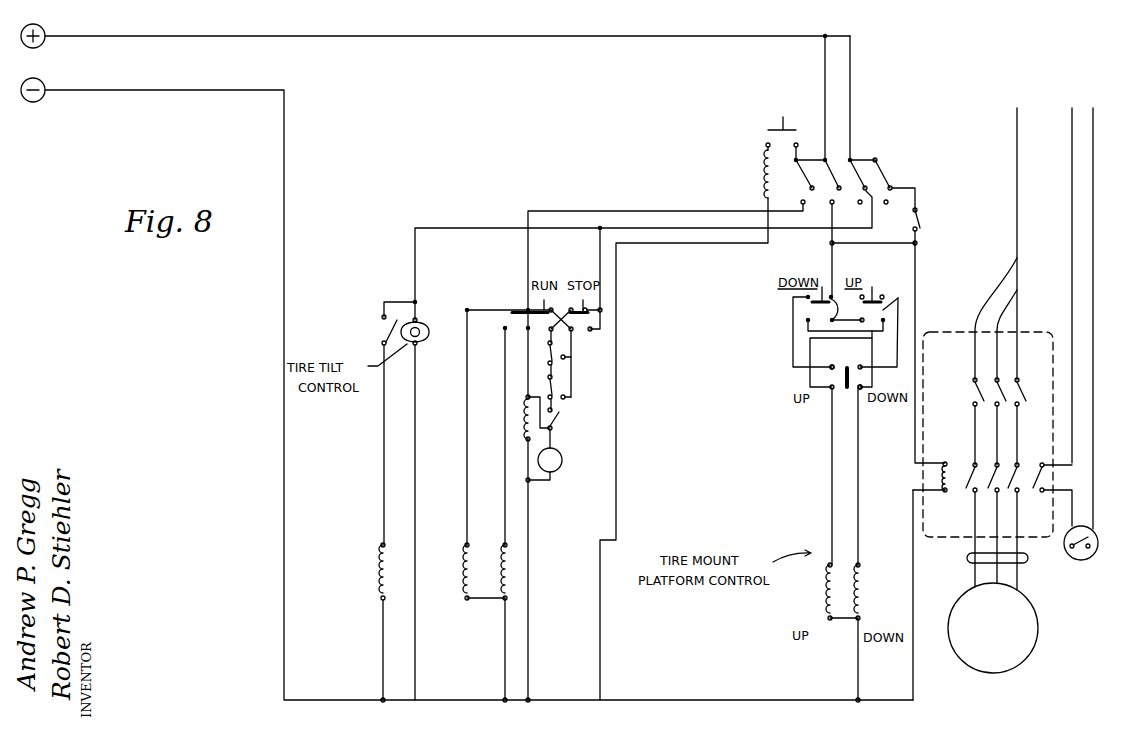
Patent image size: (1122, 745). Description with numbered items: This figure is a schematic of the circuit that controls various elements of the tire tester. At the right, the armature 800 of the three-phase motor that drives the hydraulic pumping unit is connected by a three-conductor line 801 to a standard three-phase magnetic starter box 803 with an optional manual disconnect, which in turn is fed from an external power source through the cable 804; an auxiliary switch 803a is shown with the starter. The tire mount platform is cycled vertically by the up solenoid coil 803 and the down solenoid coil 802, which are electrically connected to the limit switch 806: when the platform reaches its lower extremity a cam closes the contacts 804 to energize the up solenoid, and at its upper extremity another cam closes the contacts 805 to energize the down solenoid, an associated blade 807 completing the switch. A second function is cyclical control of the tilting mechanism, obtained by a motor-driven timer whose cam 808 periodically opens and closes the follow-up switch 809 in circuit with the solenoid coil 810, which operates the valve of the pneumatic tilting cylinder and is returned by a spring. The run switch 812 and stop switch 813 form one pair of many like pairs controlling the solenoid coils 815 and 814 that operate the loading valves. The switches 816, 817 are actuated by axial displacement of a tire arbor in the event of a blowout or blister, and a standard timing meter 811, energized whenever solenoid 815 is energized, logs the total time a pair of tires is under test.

The armature 800 is at (1022, 638).
The three-conductor line 801 is at (1028, 561).
The down solenoid coil 802 is at (863, 594).
The up solenoid coil 803 is at (822, 594).
The auxiliary switch 803a is at (1088, 561).
The contacts 804 is at (830, 380).
The contacts 805 is at (865, 379).
The limit switch 806 is at (852, 348).
The up switch 807 is at (897, 296).
The motor-driven cam 808 is at (428, 322).
The follow-up switch 809 is at (380, 328).
The solenoid coil 810 is at (379, 581).
The timing meter 811 is at (561, 465).
The run switch 812 is at (548, 294).
The stop switch 813 is at (569, 296).
The solenoid coil 814 is at (463, 556).
The solenoid coil 815 is at (501, 547).
The switch 816 is at (556, 348).
The switch 817 is at (557, 385).